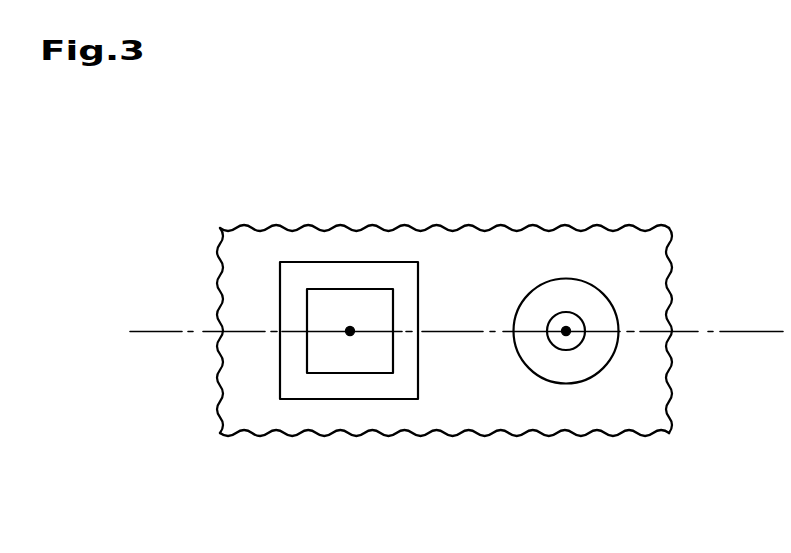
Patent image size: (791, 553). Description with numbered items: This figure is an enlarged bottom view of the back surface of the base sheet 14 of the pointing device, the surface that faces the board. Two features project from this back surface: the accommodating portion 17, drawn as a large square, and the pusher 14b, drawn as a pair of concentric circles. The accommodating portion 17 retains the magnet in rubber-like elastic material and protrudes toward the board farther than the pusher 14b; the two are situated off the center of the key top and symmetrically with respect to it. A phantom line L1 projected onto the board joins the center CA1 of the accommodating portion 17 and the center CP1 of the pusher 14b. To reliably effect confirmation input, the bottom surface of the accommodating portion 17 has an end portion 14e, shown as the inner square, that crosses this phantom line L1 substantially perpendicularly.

The base sheet 14 is at (482, 433).
The pusher 14b is at (597, 375).
The end portion 14e is at (393, 315).
The accommodating portion 17 is at (339, 400).
The center of the accommodating portion CA1 is at (350, 331).
The center of the pusher CP1 is at (566, 331).
The center line L1 is at (738, 332).